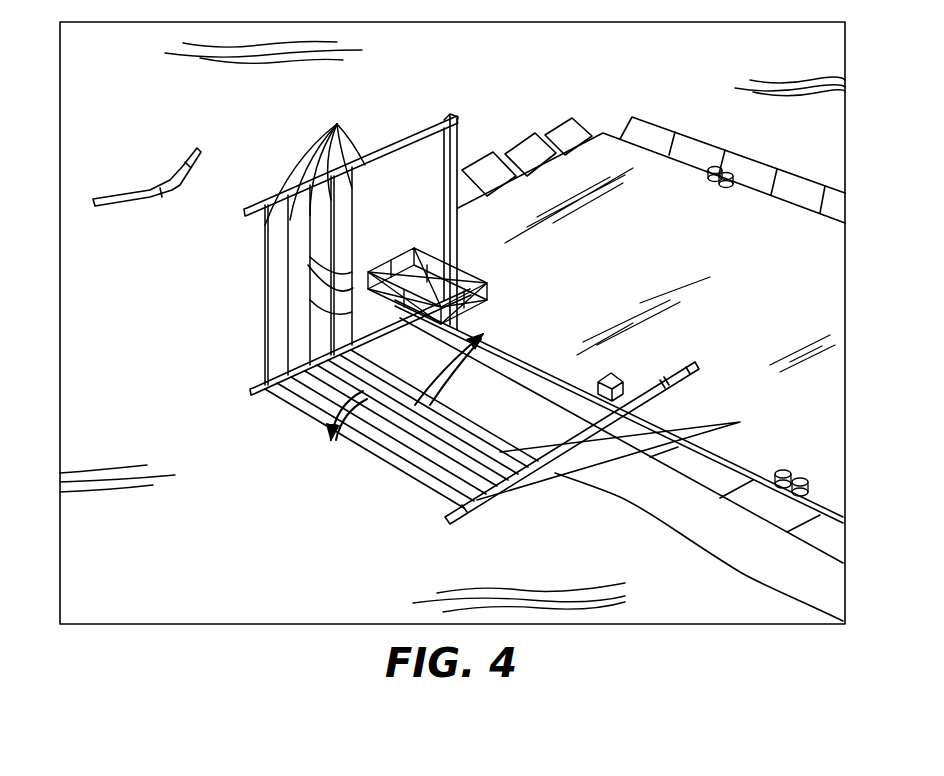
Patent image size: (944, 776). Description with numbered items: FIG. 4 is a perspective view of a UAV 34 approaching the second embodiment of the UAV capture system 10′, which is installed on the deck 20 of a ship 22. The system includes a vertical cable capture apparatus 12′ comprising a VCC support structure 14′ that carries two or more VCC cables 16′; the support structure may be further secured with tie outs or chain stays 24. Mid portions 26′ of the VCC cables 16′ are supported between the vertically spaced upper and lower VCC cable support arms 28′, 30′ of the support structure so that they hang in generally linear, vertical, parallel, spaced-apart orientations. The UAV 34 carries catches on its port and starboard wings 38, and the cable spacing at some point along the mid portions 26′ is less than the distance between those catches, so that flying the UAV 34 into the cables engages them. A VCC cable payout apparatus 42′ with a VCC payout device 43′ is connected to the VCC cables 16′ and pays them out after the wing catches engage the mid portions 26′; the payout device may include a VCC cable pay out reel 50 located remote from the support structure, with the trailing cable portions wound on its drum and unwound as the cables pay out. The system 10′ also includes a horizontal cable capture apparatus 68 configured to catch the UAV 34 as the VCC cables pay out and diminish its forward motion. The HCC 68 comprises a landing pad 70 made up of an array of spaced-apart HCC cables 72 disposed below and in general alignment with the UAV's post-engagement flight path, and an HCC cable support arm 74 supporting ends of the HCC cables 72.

The UAV capture system 10′ is at (320, 483).
The vertical cable capture apparatus (VCC) 12′ is at (500, 200).
The VCC support structure 14′ is at (463, 128).
The VCC cables 16′ is at (315, 238).
The deck 20 is at (820, 274).
The ship 22 is at (792, 567).
The chain stays 24 is at (322, 322).
The mid portions of the VCC cables 26′ is at (315, 238).
The upper VCC cable support arm 28′ is at (248, 207).
The lower VCC cable support arm 30′ is at (258, 398).
The UAV 34 is at (155, 182).
The wings 38 is at (156, 182).
The VCC cable payout apparatus 42′ is at (696, 356).
The VCC payout device 43′ is at (696, 356).
The VCC cable pay out reel 50 is at (612, 373).
The horizontal cable capture apparatus (HCC) 68 is at (492, 500).
The landing pad 70 is at (372, 455).
The HCC cables 72 is at (409, 383).
The HCC cable support arm 74 is at (530, 461).